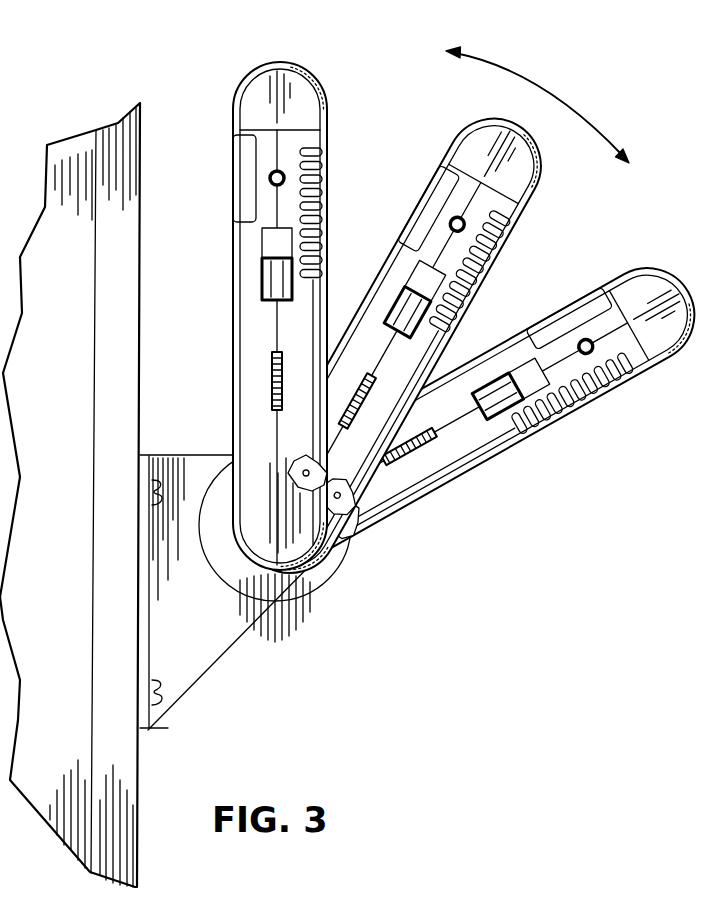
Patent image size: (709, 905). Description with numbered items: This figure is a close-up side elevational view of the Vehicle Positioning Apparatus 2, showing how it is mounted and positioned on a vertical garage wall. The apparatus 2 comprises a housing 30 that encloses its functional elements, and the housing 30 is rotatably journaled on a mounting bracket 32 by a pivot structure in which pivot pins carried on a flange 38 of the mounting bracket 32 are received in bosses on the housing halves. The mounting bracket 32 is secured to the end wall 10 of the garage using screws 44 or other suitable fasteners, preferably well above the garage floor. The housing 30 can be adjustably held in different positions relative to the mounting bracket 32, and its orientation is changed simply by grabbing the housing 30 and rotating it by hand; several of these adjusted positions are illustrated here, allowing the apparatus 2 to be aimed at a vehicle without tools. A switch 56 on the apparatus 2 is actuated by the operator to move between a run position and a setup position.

The Vehicle Positioning Apparatus 2 is at (433, 320).
The end wall 10 is at (123, 421).
The housing 30 is at (225, 260).
The switch 56 is at (237, 293).
The mounting bracket 32 is at (163, 647).
The flange 38 is at (231, 628).
The screws 44 is at (157, 683).